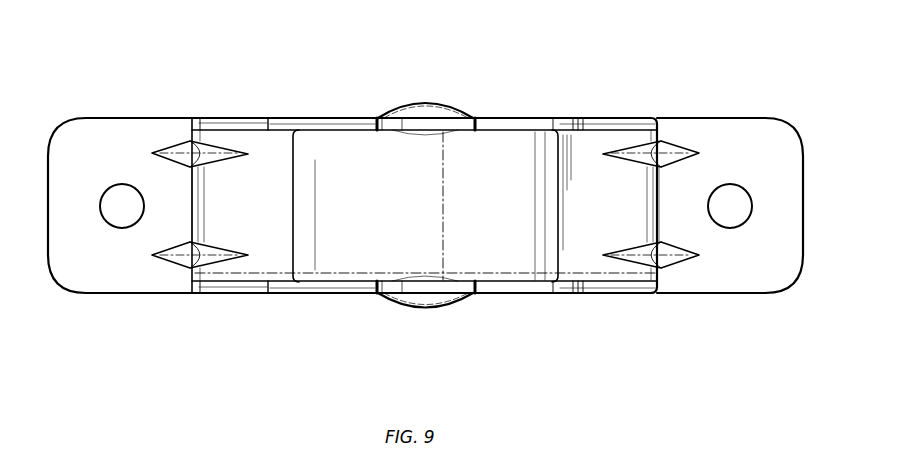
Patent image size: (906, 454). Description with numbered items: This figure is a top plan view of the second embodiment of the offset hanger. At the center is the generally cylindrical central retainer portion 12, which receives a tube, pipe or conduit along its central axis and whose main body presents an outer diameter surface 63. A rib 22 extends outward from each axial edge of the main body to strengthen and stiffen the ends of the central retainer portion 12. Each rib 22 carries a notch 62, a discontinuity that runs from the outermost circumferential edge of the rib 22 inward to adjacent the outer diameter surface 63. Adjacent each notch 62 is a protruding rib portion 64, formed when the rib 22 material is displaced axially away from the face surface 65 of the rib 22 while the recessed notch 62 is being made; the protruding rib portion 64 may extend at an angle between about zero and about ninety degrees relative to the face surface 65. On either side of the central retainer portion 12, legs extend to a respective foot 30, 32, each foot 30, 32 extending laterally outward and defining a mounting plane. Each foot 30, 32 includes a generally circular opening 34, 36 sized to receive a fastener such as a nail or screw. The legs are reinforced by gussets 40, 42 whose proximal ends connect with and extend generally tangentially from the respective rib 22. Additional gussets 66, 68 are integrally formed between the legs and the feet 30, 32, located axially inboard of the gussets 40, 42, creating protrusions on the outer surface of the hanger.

The central retainer portion 12 is at (480, 199).
The rib 22 is at (330, 122).
The foot 30 is at (82, 128).
The foot 32 is at (738, 128).
The opening 34 is at (122, 228).
The opening 36 is at (730, 228).
The gusset 40 is at (245, 120).
The gusset 42 is at (595, 122).
The notch 62 is at (463, 123).
The outer diameter surface 63 is at (382, 185).
The protruding rib portion 64 is at (428, 112).
The face surface 65 is at (350, 118).
The gusset 66 is at (190, 140).
The gusset 68 is at (652, 142).